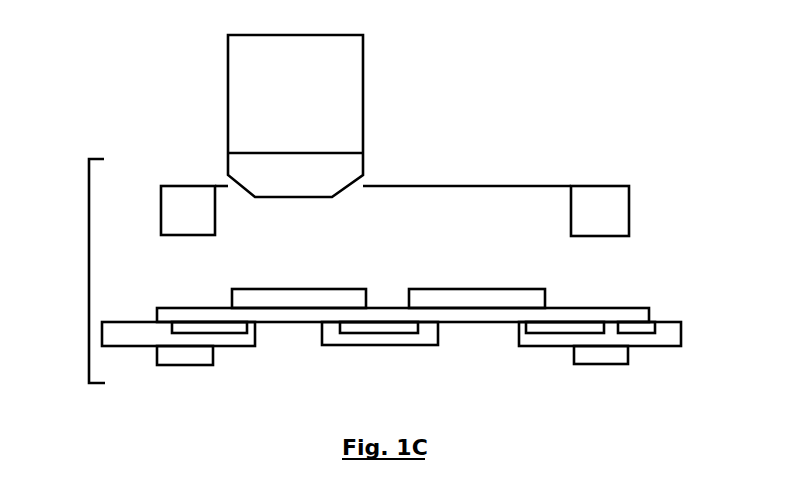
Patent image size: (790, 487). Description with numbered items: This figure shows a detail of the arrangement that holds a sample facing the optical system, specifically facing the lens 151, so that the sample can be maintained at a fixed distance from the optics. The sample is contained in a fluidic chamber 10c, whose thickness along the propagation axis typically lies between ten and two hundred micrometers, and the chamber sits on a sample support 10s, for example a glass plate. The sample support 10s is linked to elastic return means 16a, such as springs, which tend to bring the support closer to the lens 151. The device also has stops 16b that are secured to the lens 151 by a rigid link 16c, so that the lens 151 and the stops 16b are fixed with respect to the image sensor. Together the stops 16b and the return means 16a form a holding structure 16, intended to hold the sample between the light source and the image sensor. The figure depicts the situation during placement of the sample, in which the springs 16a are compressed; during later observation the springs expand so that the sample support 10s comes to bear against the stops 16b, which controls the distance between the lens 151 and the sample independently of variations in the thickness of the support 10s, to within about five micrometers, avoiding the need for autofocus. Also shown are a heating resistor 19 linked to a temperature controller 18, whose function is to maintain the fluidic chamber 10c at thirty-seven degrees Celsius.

The lens 151 is at (246, 66).
The holding structure 16 is at (89, 273).
The elastic return means 16a is at (188, 358).
The stops 16b is at (180, 219).
The rigid link 16c is at (200, 185).
The fluidic chamber 10c is at (328, 295).
The sample support 10s is at (466, 318).
The heating resistor 19 is at (234, 329).
The temperature controller 18 is at (630, 331).